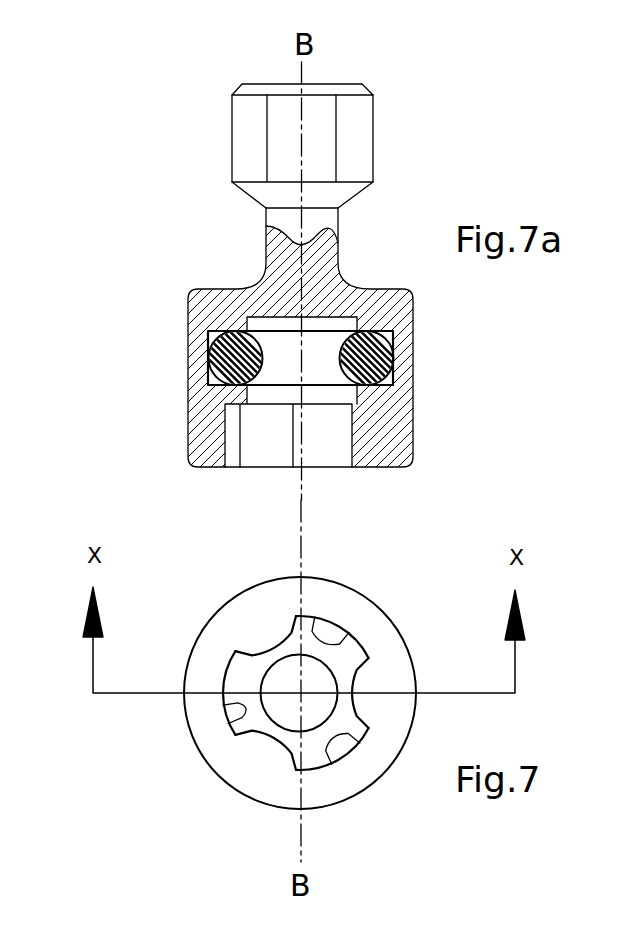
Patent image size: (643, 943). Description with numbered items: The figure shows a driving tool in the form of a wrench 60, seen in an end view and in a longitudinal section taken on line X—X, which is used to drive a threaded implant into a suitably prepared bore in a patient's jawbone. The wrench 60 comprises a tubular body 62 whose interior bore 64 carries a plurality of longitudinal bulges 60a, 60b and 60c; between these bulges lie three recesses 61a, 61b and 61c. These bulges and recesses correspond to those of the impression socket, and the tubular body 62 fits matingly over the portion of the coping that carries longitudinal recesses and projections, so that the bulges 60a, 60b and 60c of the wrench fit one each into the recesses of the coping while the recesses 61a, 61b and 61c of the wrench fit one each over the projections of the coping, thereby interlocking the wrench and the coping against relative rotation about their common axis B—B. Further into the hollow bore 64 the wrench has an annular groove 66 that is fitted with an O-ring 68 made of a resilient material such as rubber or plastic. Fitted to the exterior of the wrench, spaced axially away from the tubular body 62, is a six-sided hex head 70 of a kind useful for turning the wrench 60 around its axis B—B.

In FIG. 7A, the wrench 60 is at (340, 337).
In FIG. 7, the wrench 60 is at (297, 678).
In FIG. 7, the longitudinal bulge 60a is at (265, 648).
In FIG. 7, the longitudinal bulge 60b is at (278, 748).
In FIG. 7, the longitudinal bulge 60c is at (372, 701).
In FIG. 7, the recess 61a is at (222, 706).
In FIG. 7, the recess 61b is at (355, 743).
In FIG. 7, the recess 61c is at (311, 616).
In FIG. 7A, the tubular body 62 is at (415, 433).
In FIG. 7, the tubular body 62 is at (304, 578).
In FIG. 7, the interior bore 64 is at (317, 682).
In FIG. 7A, the annular groove 66 is at (323, 347).
In FIG. 7A, the O-ring 68 is at (263, 371).
In FIG. 7, the O-ring 68 is at (268, 681).
In FIG. 7A, the six-sided (hex) head 70 is at (325, 92).